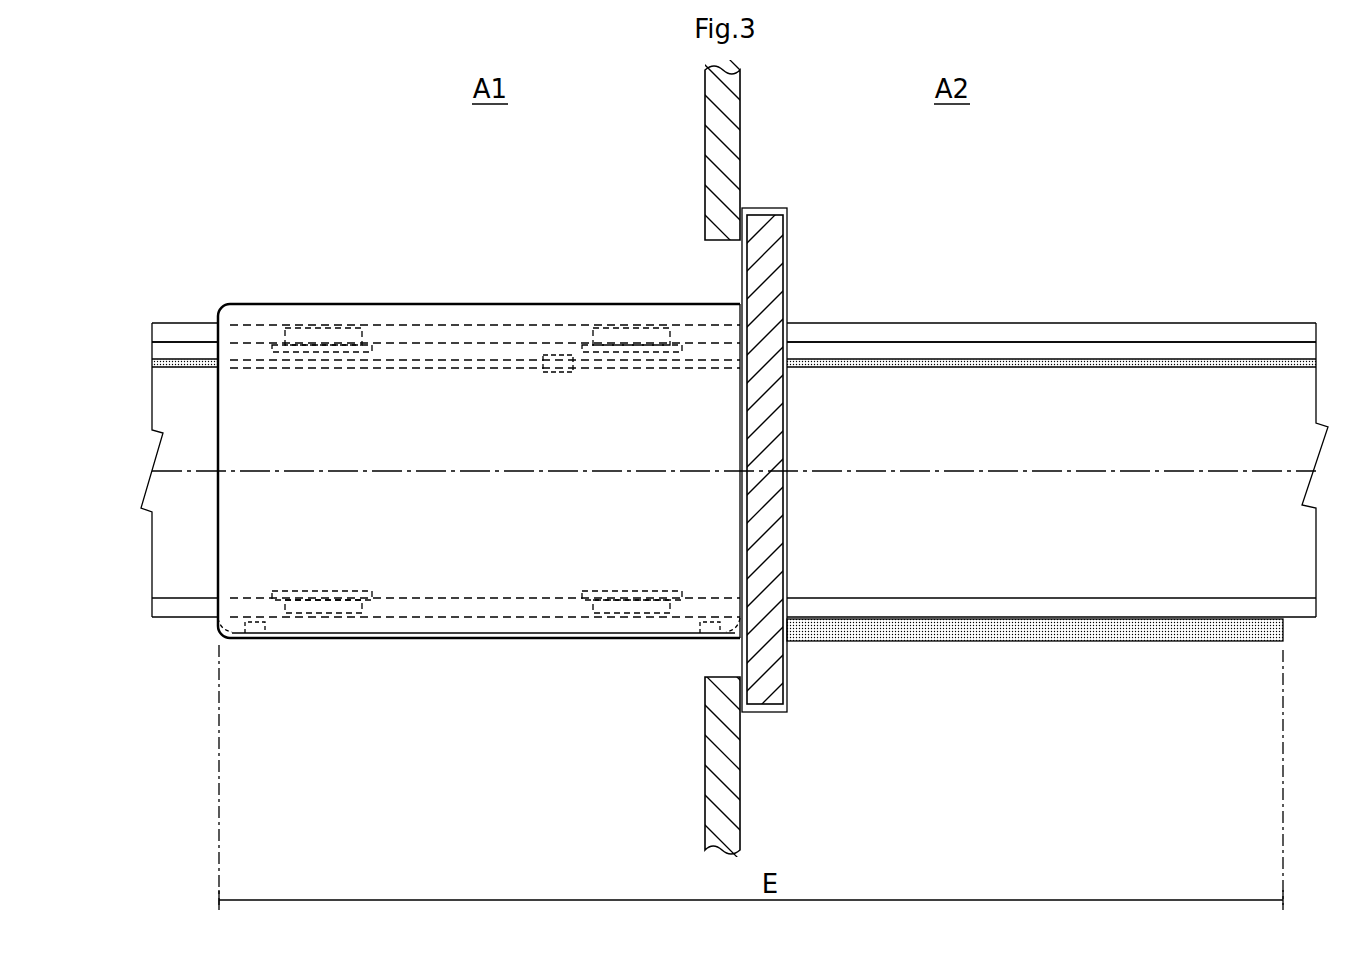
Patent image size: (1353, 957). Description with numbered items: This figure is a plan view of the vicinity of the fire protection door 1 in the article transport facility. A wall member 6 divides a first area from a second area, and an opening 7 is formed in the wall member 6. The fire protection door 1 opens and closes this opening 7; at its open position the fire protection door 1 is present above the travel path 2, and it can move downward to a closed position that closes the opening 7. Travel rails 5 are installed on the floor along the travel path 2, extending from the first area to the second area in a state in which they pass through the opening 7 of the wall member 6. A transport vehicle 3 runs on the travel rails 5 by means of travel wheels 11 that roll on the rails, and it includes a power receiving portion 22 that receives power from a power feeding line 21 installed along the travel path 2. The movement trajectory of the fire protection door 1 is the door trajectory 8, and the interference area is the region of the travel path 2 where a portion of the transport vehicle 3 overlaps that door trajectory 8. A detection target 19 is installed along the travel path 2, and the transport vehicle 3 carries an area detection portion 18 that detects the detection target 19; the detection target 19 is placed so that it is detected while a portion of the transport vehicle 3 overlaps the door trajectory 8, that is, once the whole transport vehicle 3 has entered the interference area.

The fire protection door 1 is at (783, 230).
The travel path 2 is at (1205, 470).
The transport vehicle 3 is at (518, 290).
The travel rail 5 is at (200, 333).
The wall member 6 is at (740, 137).
The opening 7 is at (716, 262).
The door trajectory 8 is at (787, 307).
The travel wheel 11 is at (352, 330).
The area detection portion 18 is at (258, 640).
The detection target 19 is at (1073, 632).
The power feeding line 21 is at (432, 370).
The power receiving portion 22 is at (563, 373).